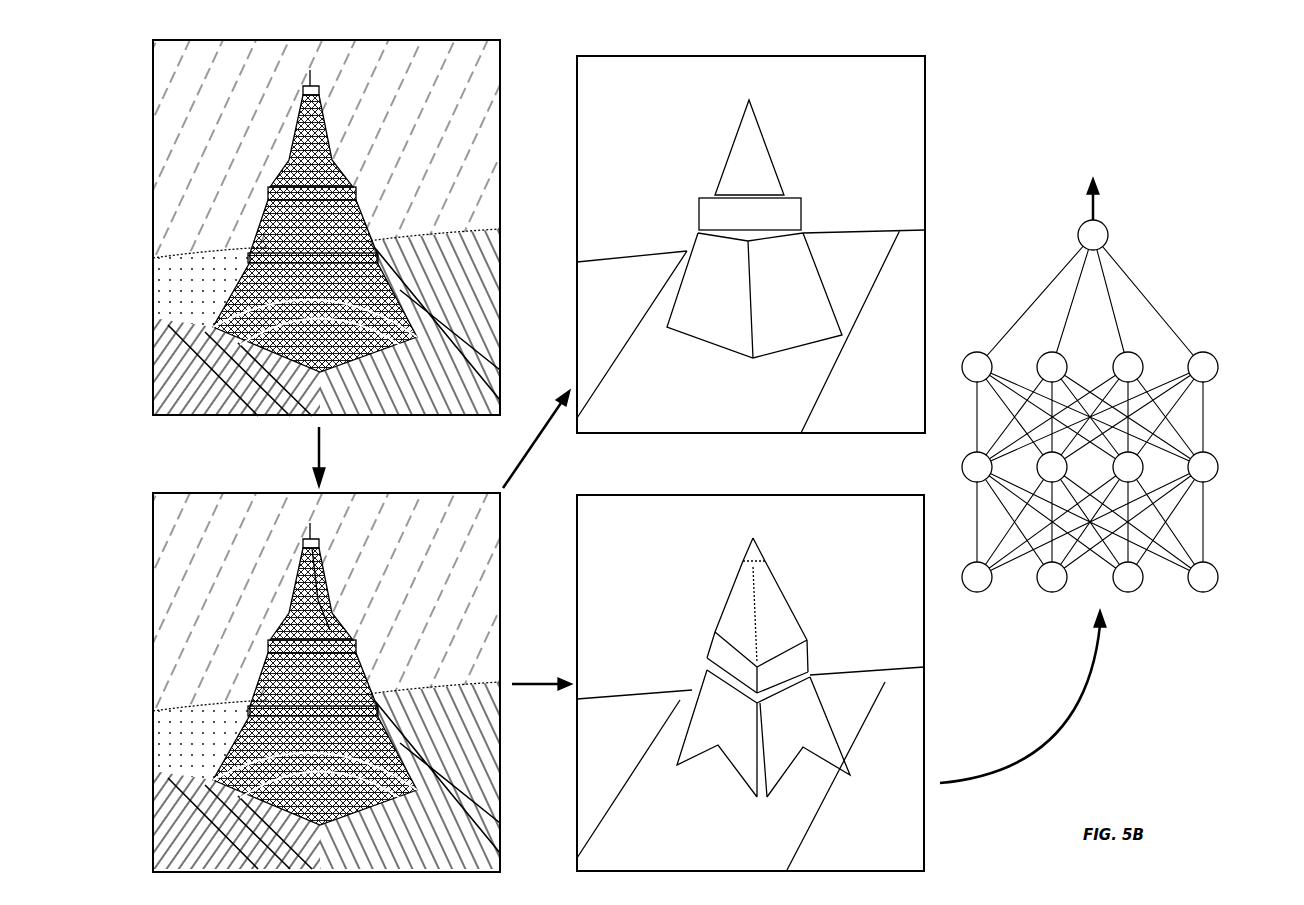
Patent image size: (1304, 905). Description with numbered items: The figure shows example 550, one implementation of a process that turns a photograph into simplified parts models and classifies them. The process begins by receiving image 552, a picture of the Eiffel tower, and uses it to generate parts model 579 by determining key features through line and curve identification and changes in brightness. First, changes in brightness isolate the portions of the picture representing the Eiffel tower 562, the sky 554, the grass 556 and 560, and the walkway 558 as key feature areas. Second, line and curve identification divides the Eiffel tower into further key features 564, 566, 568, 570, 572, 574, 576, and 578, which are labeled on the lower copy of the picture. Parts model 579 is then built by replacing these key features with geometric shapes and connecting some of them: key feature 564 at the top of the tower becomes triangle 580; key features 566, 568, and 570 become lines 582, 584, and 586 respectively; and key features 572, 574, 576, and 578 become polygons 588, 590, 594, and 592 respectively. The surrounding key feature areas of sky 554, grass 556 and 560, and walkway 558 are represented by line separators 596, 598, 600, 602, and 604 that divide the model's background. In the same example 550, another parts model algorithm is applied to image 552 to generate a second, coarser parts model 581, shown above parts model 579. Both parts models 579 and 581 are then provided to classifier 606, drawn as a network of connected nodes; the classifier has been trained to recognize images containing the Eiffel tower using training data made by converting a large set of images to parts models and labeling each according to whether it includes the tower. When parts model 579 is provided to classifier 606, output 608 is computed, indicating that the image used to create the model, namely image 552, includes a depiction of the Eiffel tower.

The example 550 is at (1160, 128).
The image 552 is at (503, 72).
The sky 554 is at (326, 602).
The grass 556 is at (210, 740).
The walkway 558 is at (236, 820).
The grass 560 is at (410, 775).
The Eiffel tower 562 is at (324, 662).
The key feature 564 is at (320, 537).
The key feature 566 is at (300, 598).
The key feature 568 is at (326, 580).
The key feature 570 is at (332, 612).
The key feature 572 is at (273, 648).
The key feature 574 is at (343, 660).
The key feature 576 is at (356, 707).
The key feature 578 is at (262, 702).
The parts model 579 is at (750, 662).
The triangle 580 is at (760, 550).
The parts model 581 is at (927, 88).
The line 582 is at (733, 590).
The line 584 is at (756, 620).
The line 586 is at (776, 582).
The polygon 588 is at (710, 645).
The polygon 590 is at (810, 656).
The polygon 592 is at (737, 775).
The polygon 594 is at (790, 766).
The line separator 596 is at (620, 803).
The line separator 598 is at (820, 822).
The line separator 600 is at (868, 722).
The line separator 602 is at (872, 663).
The line separator 604 is at (603, 693).
The classifier 606 is at (1226, 227).
The output 608 is at (1115, 199).